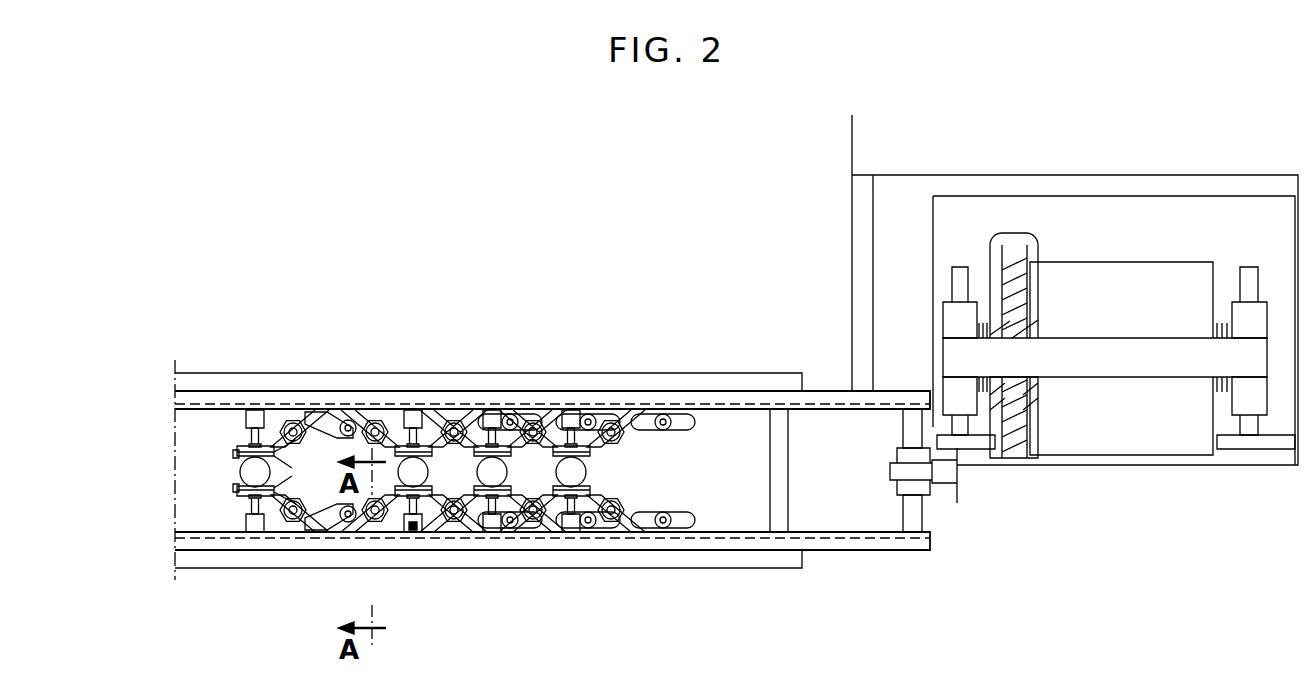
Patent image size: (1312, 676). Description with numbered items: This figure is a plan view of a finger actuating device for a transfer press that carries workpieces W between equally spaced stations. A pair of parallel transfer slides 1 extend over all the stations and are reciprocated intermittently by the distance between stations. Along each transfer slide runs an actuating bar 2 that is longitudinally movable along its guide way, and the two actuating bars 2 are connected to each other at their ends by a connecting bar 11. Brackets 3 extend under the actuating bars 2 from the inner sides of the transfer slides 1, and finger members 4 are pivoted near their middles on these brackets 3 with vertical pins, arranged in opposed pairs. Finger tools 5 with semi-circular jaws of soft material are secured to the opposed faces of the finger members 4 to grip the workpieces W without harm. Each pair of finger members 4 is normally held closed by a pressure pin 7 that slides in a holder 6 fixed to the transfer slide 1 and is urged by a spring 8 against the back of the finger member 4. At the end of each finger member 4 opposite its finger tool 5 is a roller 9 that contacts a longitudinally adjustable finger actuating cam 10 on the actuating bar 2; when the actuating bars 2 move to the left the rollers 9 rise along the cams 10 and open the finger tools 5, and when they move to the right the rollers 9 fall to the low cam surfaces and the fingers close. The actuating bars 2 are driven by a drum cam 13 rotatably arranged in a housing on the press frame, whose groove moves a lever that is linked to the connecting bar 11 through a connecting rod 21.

The transfer slide 1 is at (578, 388).
The actuating bar 2 is at (737, 400).
The bracket 3 is at (282, 440).
The finger member 4 is at (284, 474).
The finger tool 5 is at (236, 453).
The holder 6 is at (255, 410).
The pressure pin 7 is at (247, 442).
The spring 8 is at (415, 530).
The roller 9 is at (358, 424).
The finger actuating cam 10 is at (343, 414).
The connecting bar 11 is at (922, 518).
The drum cam 13 is at (1137, 272).
The connecting rod 21 is at (916, 478).
The workpiece W is at (240, 474).